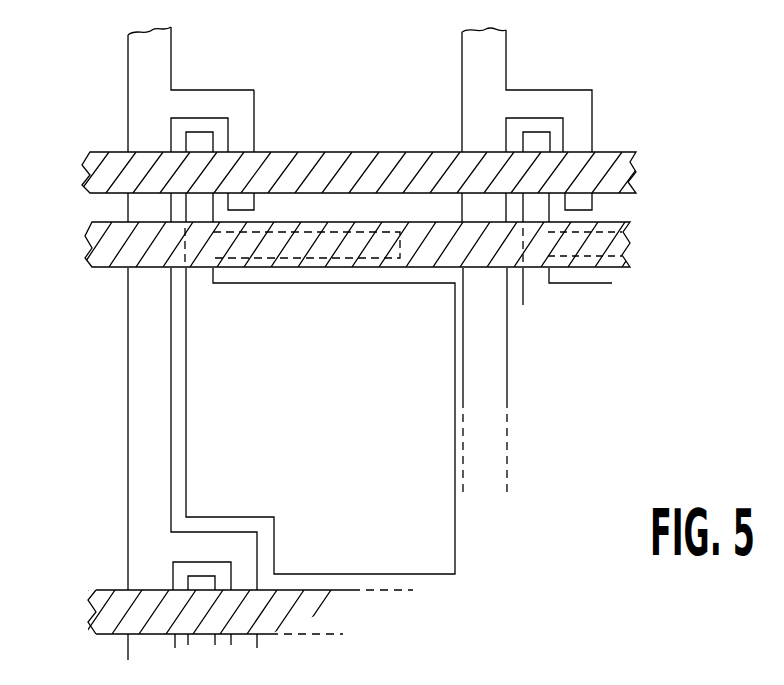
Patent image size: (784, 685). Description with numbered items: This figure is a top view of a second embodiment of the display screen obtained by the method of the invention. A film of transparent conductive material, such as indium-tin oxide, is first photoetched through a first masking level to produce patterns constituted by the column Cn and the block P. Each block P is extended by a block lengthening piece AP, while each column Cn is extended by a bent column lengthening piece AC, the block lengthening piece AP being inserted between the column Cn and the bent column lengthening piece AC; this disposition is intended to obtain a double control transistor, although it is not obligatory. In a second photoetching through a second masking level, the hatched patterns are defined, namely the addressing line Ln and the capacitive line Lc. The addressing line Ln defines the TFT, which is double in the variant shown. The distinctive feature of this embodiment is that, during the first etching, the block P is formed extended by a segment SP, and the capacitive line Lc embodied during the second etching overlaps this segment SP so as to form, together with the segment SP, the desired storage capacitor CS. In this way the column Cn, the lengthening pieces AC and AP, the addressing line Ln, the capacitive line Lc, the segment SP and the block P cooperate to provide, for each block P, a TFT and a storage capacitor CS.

The column Cn is at (138, 52).
The column lengthening piece AC is at (233, 102).
The thin film transistor TFT is at (260, 121).
The block lengthening piece AP is at (200, 142).
The addressing line Ln is at (113, 180).
The segment SP is at (257, 258).
The storage capacitor CS is at (382, 268).
The capacitive line Lc is at (490, 257).
The block P is at (317, 453).